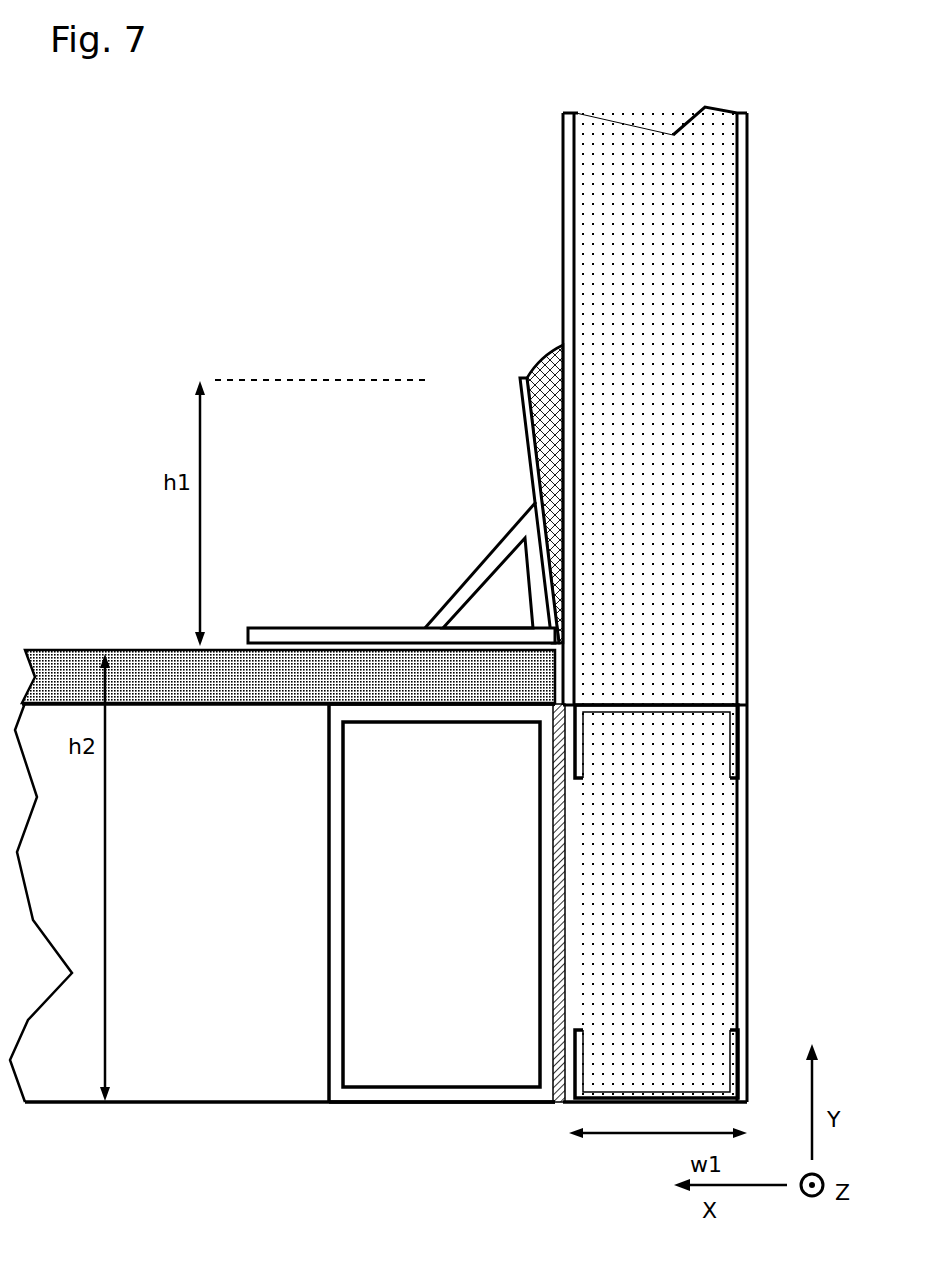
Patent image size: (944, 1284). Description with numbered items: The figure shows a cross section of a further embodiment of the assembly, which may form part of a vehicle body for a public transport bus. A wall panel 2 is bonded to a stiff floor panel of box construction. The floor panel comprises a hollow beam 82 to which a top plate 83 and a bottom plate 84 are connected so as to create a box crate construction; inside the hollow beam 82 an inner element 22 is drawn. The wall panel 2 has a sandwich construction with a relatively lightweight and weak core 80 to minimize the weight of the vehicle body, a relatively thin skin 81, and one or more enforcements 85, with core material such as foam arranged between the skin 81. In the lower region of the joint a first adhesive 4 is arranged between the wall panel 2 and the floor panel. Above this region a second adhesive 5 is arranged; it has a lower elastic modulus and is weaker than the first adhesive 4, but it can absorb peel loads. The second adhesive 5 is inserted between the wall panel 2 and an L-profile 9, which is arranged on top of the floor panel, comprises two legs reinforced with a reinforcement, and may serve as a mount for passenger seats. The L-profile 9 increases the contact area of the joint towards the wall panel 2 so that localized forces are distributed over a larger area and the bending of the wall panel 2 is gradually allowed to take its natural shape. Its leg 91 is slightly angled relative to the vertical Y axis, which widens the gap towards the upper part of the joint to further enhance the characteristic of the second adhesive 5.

The wall panel 2 is at (613, 287).
The core 80 is at (673, 399).
The skin 81 is at (562, 162).
The enforcement 85 is at (683, 705).
The second adhesive 5 is at (557, 481).
The leg 91 is at (527, 468).
The L-profile 9 is at (464, 577).
The top plate 83 is at (43, 672).
The bottom plate 84 is at (228, 1104).
The hollow beam 82 is at (445, 1077).
The inner element 22 is at (568, 933).
The first adhesive 4 is at (552, 810).